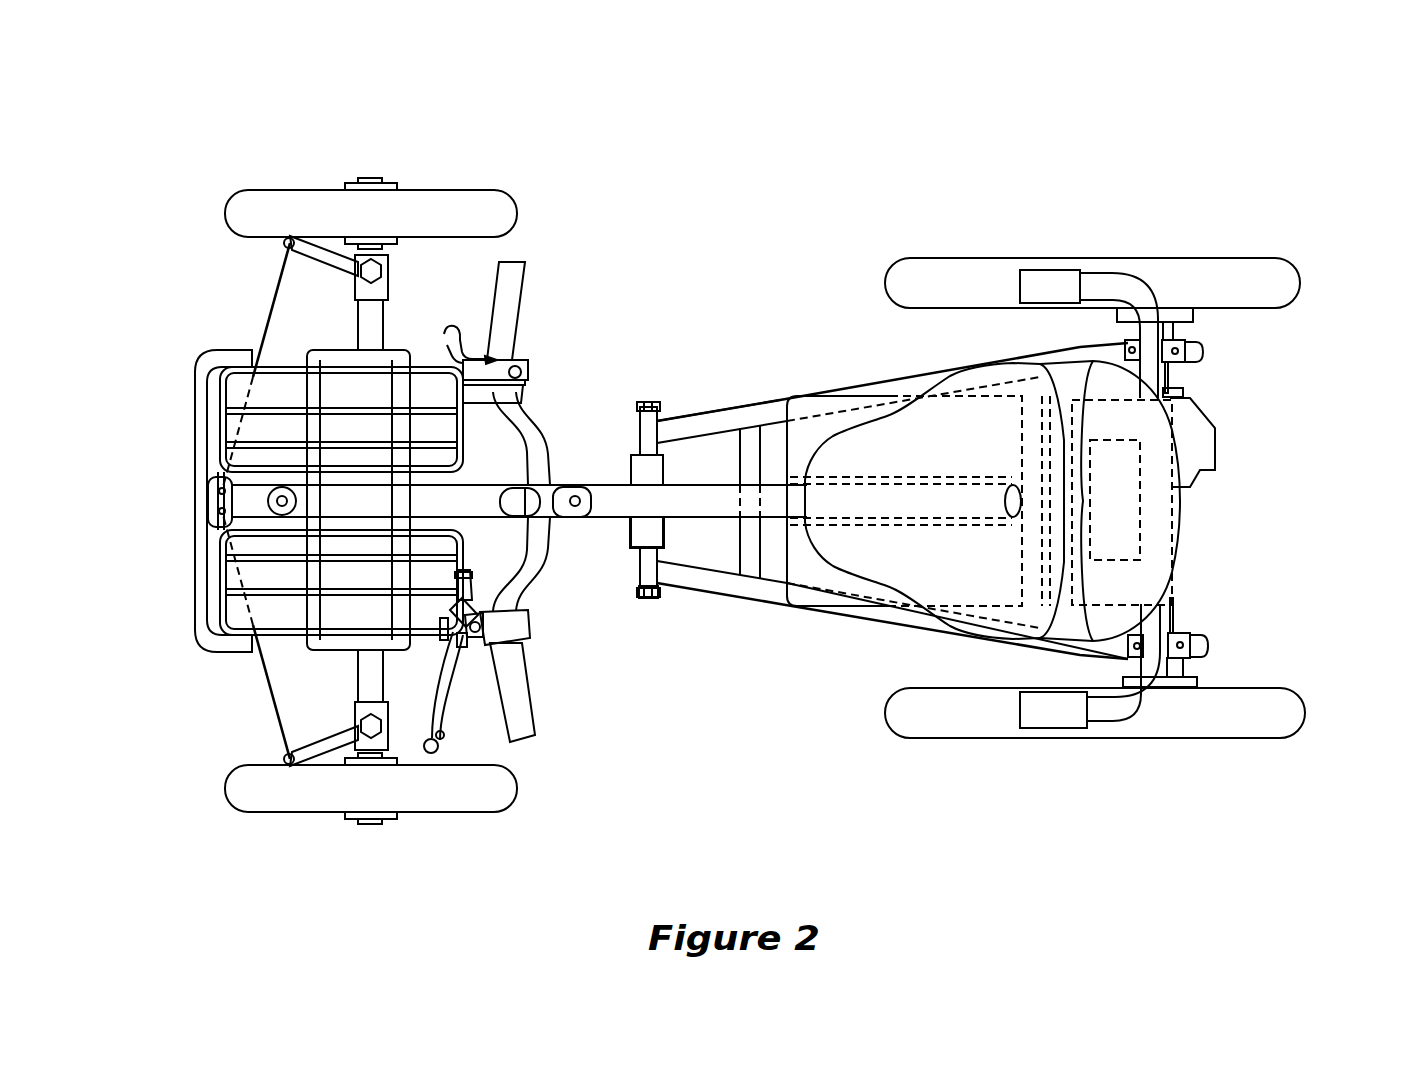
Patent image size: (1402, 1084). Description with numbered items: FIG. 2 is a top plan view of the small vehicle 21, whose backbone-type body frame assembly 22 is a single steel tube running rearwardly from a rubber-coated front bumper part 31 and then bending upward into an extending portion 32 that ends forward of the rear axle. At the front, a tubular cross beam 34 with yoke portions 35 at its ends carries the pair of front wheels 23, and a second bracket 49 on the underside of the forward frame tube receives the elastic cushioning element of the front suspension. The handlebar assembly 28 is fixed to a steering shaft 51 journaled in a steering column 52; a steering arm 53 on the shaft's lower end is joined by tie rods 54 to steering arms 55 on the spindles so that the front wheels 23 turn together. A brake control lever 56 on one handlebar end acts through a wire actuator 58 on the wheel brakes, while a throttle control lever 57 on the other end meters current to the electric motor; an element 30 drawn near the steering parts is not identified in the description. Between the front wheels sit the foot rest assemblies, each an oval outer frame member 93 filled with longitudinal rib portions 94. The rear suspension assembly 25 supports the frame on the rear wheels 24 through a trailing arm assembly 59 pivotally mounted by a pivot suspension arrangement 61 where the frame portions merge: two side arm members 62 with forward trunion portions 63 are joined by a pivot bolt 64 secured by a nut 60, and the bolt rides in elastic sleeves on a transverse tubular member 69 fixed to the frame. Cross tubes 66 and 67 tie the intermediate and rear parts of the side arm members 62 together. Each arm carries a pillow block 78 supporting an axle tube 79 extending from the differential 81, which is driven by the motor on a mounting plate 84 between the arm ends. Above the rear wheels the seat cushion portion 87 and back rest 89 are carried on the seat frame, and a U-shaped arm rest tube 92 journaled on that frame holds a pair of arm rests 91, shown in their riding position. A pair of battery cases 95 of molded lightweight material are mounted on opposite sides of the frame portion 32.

The small vehicle 21 is at (1053, 180).
The body frame assembly 22 is at (590, 481).
The front wheels 23 is at (490, 190).
The rear wheels 24 is at (1248, 258).
The rear suspension assembly 25 is at (1305, 349).
The handlebar assembly 28 is at (532, 430).
The steering post 30 is at (390, 733).
The front bumper part 31 is at (205, 651).
The extending frame portion 32 is at (424, 362).
The tubular cross beam 34 is at (390, 311).
The yoke portions 35 is at (386, 258).
The second bracket 49 is at (320, 650).
The steering shaft 51 is at (560, 485).
The steering column 52 is at (475, 500).
The steering arm 53 is at (210, 499).
The tie rods 54 is at (276, 287).
The steering arms 55 is at (305, 252).
The brake control lever 56 is at (440, 737).
The throttle control lever 57 is at (459, 330).
The wire actuator 58 is at (460, 642).
The trailing arm assembly 59 is at (776, 392).
The nut 60 is at (659, 596).
The pivot suspension arrangement 61 is at (636, 600).
The side arm members 62 is at (717, 418).
The trunion portion 63 is at (640, 428).
The pivot bolt 64 is at (650, 404).
The cross tube 66 is at (758, 578).
The cross tube 67 is at (1018, 580).
The tubular member 69 is at (632, 530).
The pillow block 78 is at (1203, 358).
The axle tubes 79 is at (1175, 605).
The differential 81 is at (1215, 438).
The mounting plate 84 is at (1180, 500).
The seat cushion portion 87 is at (868, 582).
The back rest 89 is at (1180, 532).
The arm rests 91 is at (952, 260).
The arm rest tube 92 is at (432, 638).
The outer frame members 93 is at (232, 364).
The rib portions 94 is at (285, 445).
The battery cases 95 is at (894, 386).